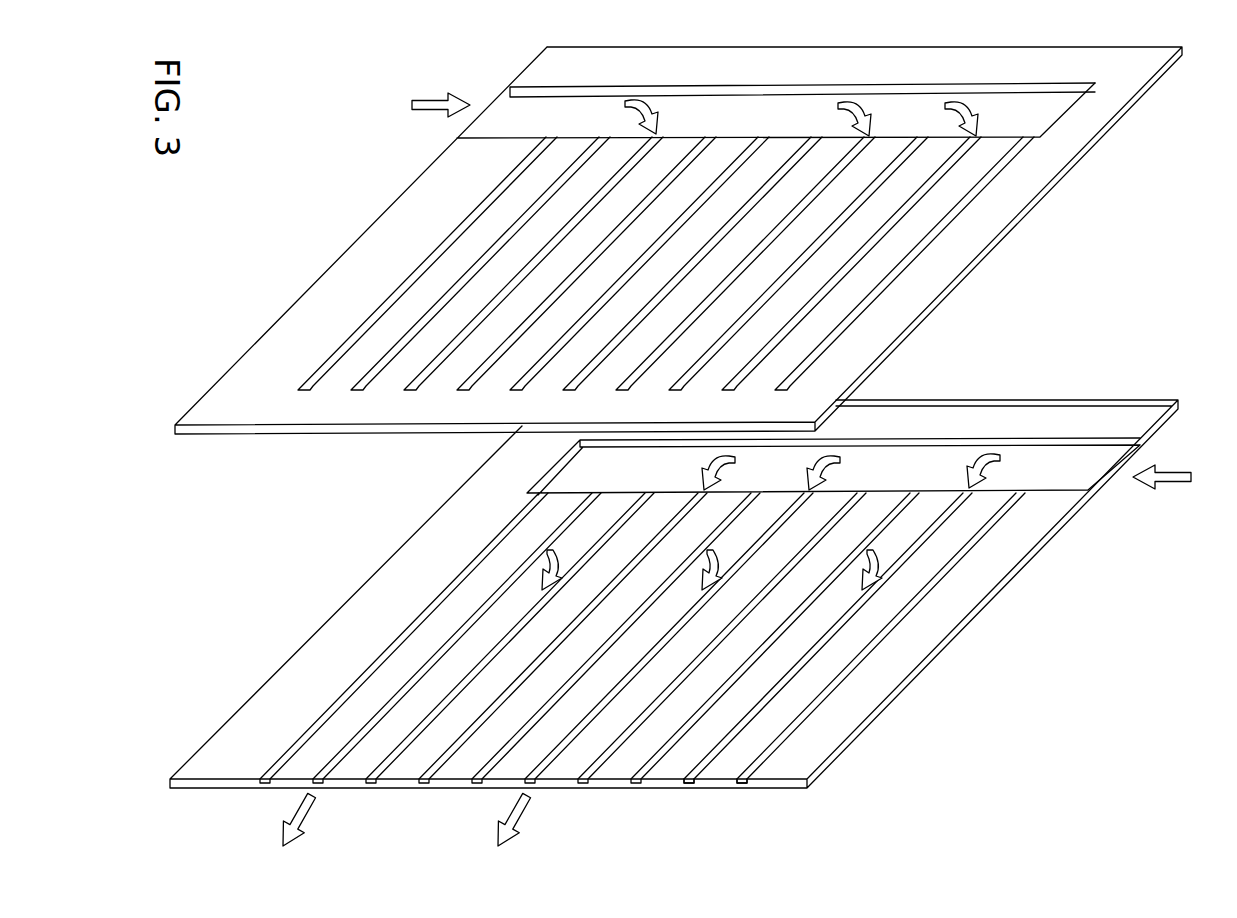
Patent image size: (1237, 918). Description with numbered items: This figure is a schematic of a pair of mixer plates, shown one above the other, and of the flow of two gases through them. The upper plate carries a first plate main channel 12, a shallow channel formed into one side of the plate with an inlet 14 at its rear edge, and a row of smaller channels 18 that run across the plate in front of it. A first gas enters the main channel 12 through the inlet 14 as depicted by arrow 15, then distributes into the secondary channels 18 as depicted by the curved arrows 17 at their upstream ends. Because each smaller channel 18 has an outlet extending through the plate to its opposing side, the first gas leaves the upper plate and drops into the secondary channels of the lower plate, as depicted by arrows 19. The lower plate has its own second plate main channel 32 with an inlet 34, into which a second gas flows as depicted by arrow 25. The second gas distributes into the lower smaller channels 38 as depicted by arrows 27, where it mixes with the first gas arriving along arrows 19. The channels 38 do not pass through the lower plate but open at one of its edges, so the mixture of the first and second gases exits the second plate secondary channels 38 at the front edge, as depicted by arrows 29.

The first plate main channel 12 is at (913, 95).
The inlet 14 is at (493, 112).
The arrow 15 is at (434, 110).
The arrows 17 is at (657, 126).
The smaller channels 18 is at (422, 315).
The arrows 19 is at (864, 586).
The arrow 25 is at (1157, 462).
The arrows 27 is at (970, 488).
The arrows 29 is at (293, 832).
The second plate main channel 32 is at (1018, 462).
The inlet 34 is at (1102, 477).
The smaller channels 38 is at (738, 779).